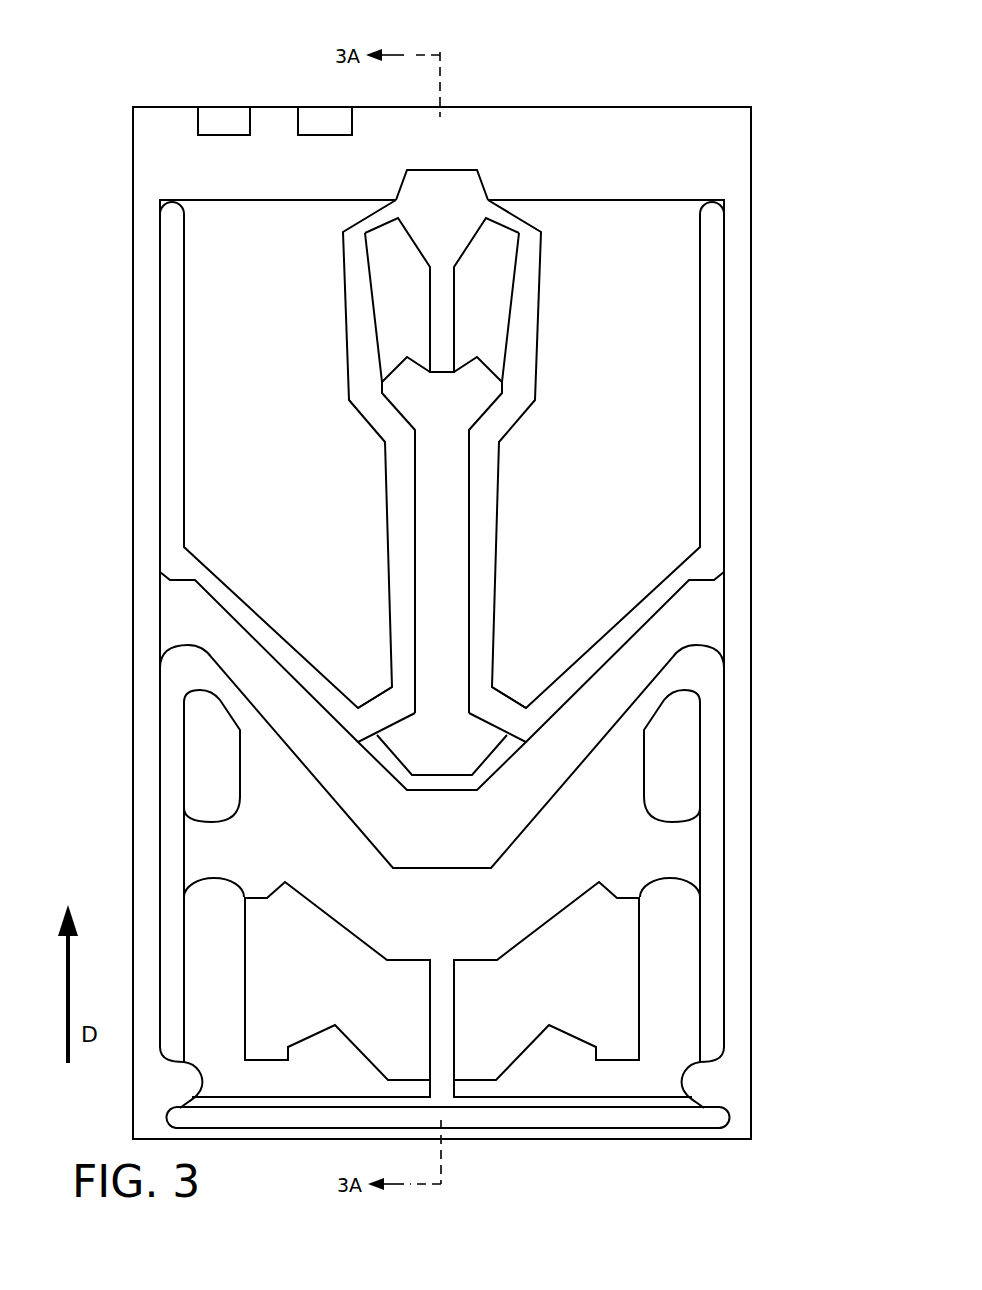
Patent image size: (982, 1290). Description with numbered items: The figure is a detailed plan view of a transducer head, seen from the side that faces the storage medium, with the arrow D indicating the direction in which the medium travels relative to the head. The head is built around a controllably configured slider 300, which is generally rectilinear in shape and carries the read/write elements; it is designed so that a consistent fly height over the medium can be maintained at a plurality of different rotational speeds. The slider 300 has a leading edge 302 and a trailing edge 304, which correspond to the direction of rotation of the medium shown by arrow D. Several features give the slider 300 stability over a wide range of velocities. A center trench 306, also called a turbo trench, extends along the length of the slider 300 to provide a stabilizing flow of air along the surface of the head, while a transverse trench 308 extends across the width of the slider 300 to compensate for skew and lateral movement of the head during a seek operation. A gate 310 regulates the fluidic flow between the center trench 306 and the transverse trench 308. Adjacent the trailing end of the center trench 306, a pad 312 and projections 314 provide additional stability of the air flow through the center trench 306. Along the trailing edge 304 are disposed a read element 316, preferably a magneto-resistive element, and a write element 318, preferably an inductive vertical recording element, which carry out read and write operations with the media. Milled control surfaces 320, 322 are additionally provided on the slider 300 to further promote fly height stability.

The slider 300 is at (648, 56).
The leading edge 302 is at (660, 1141).
The trailing edge 304 is at (717, 103).
The center trench 306 is at (447, 607).
The transverse trench 308 is at (456, 818).
The gate 310 is at (443, 783).
The pad 312 is at (463, 183).
The projections 314 is at (518, 210).
The read element 316 is at (225, 115).
The write element 318 is at (325, 115).
The milled control surface 320 is at (230, 408).
The milled control surface 322 is at (173, 302).